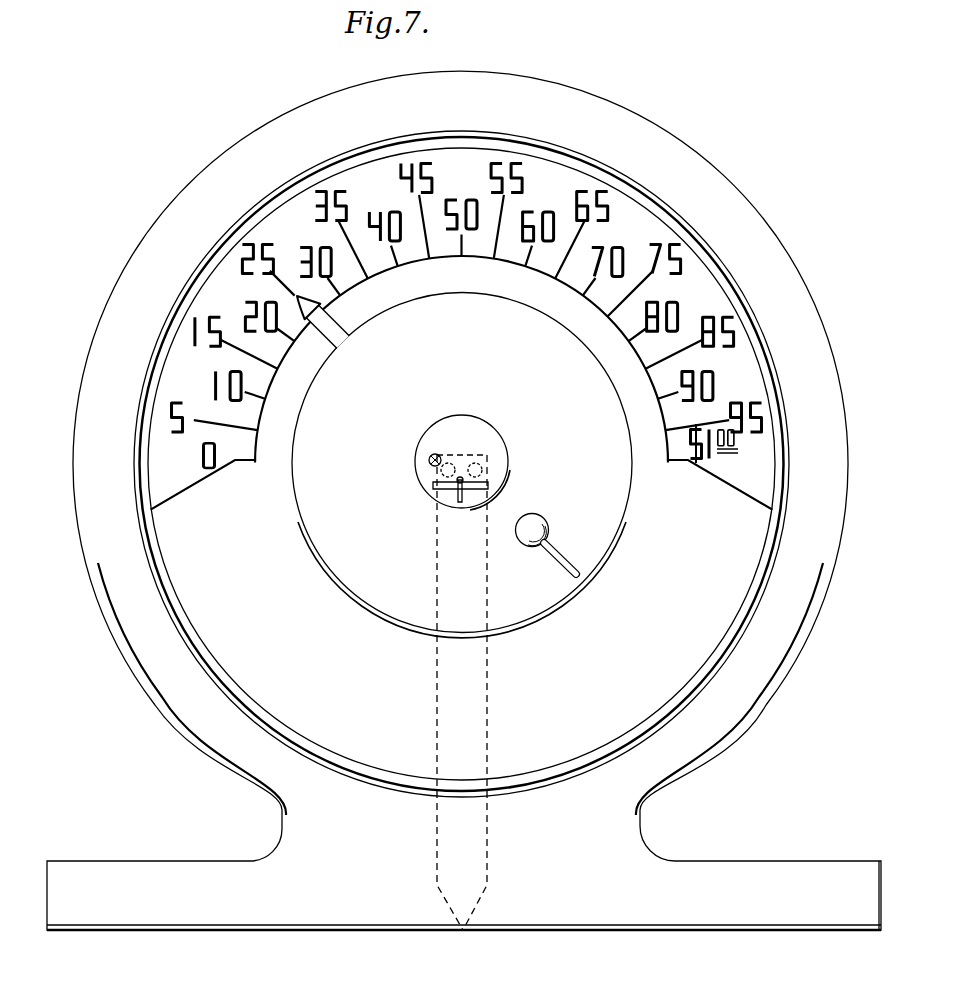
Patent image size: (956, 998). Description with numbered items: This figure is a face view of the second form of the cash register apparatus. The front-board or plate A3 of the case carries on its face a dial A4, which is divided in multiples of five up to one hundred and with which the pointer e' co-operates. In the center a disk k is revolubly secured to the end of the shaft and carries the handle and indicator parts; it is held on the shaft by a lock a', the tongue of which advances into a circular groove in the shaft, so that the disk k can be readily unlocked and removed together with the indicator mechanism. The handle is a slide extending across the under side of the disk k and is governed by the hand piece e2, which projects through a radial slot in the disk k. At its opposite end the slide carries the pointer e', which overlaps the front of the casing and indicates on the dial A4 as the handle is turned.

The front plate A3 is at (464, 500).
The dial A4 is at (462, 336).
The lock a' is at (462, 672).
The disk k is at (462, 465).
The pointer e' is at (320, 328).
The hand piece e2 is at (532, 518).